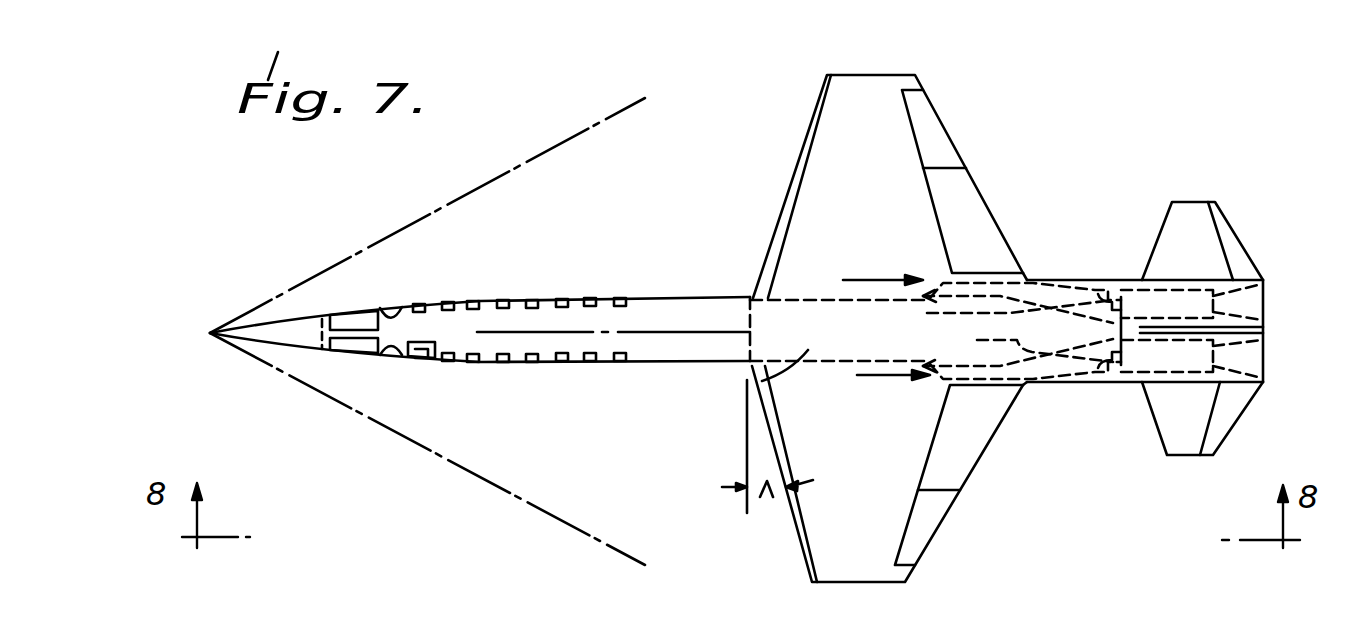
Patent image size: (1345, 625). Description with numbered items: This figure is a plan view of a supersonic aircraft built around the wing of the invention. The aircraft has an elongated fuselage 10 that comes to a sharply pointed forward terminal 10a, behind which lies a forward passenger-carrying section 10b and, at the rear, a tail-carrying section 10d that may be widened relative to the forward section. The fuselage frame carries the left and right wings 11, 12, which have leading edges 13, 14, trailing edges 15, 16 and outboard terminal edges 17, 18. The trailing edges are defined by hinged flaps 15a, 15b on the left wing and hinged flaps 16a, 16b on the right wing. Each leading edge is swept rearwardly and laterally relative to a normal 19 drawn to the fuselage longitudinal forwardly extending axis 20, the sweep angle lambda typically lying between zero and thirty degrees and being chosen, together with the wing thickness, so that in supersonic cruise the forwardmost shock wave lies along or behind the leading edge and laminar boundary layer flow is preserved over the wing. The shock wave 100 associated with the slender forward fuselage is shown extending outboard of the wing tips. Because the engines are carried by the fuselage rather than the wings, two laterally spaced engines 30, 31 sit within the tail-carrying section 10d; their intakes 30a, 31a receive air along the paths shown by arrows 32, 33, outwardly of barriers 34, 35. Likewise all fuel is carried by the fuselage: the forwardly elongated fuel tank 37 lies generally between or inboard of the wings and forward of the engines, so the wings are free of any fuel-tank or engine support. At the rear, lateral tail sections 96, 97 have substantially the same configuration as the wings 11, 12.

The fuselage 10 is at (545, 288).
The forward terminal 10a is at (210, 333).
The forward passenger-carrying section 10b is at (548, 368).
The tail-carrying section 10d is at (1122, 278).
The left wing 11 is at (857, 490).
The right wing 12 is at (890, 151).
The leading edge 13 is at (805, 543).
The leading edge 14 is at (807, 130).
The trailing edge 15 is at (993, 478).
The hinged flap 15a is at (923, 535).
The hinged flap 15b is at (978, 453).
The trailing edge 16 is at (985, 153).
The hinged flap 16a is at (932, 110).
The hinged flap 16b is at (980, 213).
The outboard terminal edge 17 is at (830, 585).
The outboard terminal edge 18 is at (873, 72).
The normal 19 is at (747, 437).
The fuselage longitudinal axis 20 is at (676, 330).
The engine 30 is at (1195, 363).
The intake 30a is at (1113, 367).
The engine 31 is at (1192, 296).
The intake 31a is at (1103, 277).
The arrow 32 is at (877, 378).
The arrow 33 is at (858, 280).
The barrier 34 is at (1022, 351).
The barrier 35 is at (1006, 310).
The fuel tank 37 is at (762, 381).
The lateral tail section 96 is at (1183, 445).
The lateral tail section 97 is at (1190, 218).
The shock wave 100 is at (413, 222).